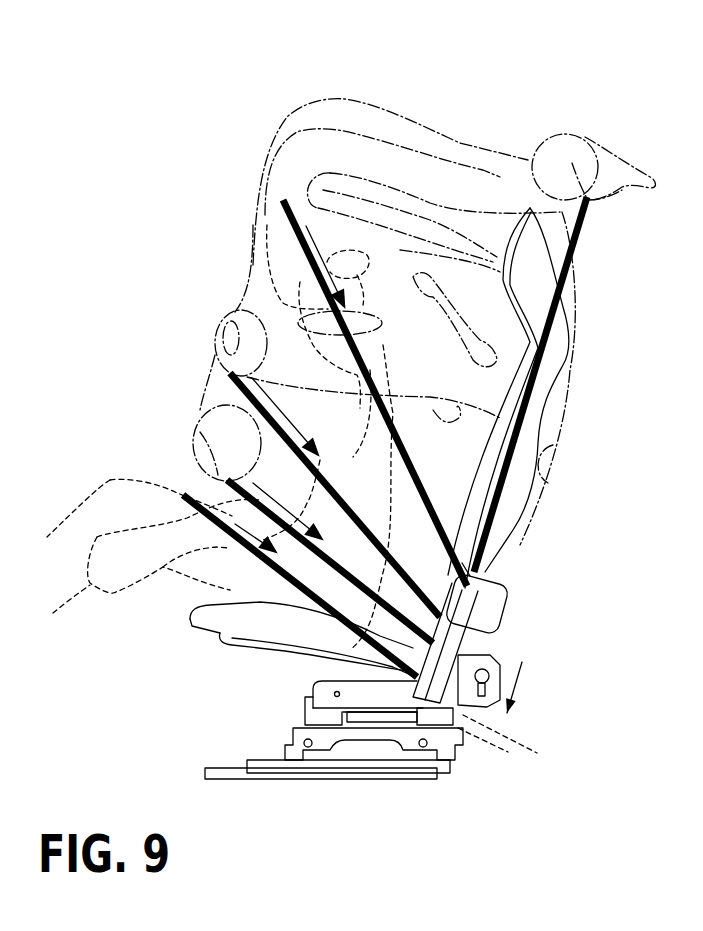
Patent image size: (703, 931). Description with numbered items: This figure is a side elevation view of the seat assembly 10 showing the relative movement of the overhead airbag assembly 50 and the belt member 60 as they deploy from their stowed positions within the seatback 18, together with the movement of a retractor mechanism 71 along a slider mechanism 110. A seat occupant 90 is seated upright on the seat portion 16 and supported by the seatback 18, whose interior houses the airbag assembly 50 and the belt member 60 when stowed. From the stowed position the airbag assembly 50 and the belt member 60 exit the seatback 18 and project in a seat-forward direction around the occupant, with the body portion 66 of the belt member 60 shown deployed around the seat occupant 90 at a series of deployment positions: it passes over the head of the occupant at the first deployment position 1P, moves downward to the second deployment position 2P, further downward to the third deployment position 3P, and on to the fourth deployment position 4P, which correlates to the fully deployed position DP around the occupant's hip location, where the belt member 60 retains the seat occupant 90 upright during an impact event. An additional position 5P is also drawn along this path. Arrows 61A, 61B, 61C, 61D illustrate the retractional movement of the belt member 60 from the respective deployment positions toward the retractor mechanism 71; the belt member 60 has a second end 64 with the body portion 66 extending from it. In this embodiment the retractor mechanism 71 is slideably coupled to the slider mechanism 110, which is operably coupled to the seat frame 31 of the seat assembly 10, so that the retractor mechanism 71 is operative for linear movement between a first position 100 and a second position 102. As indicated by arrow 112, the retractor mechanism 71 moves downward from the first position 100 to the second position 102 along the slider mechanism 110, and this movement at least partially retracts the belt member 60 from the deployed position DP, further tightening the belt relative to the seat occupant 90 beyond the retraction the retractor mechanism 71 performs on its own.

The seat assembly 10 is at (302, 100).
The airbag assembly 50 is at (478, 102).
The seat occupant 90 is at (268, 376).
The body portion 66 is at (270, 305).
The seatback 18 is at (582, 281).
The belt member 60 is at (533, 392).
The arrow 61A is at (318, 258).
The arrow 61B is at (270, 305).
The arrow 61C is at (280, 507).
The arrow 61D is at (248, 522).
The first deployment position 1P is at (590, 196).
The second deployment position 2P is at (283, 201).
The third deployment position 3P is at (230, 375).
The fourth deployment position 4P is at (227, 481).
The fifth position 5P is at (183, 496).
The deployed position DP is at (170, 391).
The second end 64 is at (477, 577).
The first position 100 is at (508, 593).
The retractor mechanism 71 is at (507, 618).
The slider mechanism 110 is at (478, 643).
The arrow 112 is at (522, 662).
The second position 102 is at (485, 756).
The seat portion 16 is at (287, 634).
The seat frame 31 is at (299, 694).